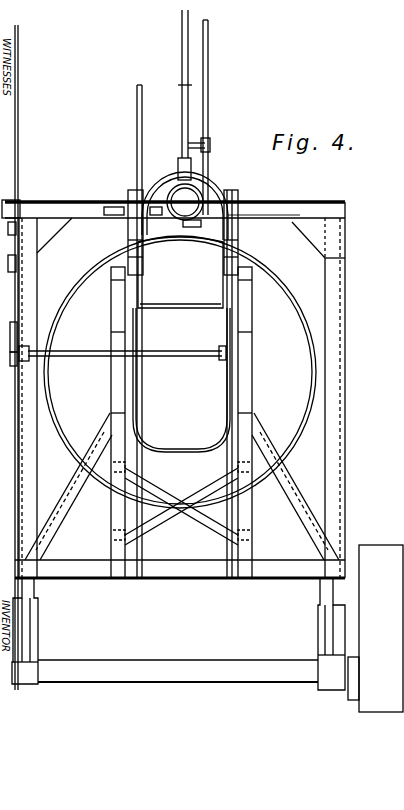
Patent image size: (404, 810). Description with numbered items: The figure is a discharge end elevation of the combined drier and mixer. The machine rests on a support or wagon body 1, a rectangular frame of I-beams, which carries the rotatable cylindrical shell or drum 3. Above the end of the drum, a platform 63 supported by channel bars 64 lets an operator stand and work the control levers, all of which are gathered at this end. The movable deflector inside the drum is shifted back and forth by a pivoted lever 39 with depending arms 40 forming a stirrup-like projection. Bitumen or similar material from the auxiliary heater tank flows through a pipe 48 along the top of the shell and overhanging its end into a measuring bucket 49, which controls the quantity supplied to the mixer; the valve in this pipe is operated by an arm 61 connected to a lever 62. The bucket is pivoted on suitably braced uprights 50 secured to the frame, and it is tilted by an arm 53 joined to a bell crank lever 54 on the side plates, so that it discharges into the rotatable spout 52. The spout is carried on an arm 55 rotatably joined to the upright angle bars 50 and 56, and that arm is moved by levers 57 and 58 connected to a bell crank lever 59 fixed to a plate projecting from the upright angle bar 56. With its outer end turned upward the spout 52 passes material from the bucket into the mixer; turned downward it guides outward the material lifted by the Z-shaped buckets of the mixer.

The support or wagon body 1 is at (24, 590).
The rotatable cylindrical shell or drum 3 is at (280, 292).
The pivoted lever 39 is at (182, 68).
The arms 40 is at (128, 336).
The pipe 48 is at (185, 205).
The measuring bucket 49 is at (207, 272).
The uprights 50 is at (113, 534).
The spout 52 is at (196, 452).
The arm 53 is at (137, 147).
The bell crank lever 54 is at (130, 241).
The arm 55 is at (81, 350).
The upright angle bar 56 is at (343, 421).
The lever 57 is at (8, 359).
The lever 58 is at (8, 337).
The bell crank lever 59 is at (9, 357).
The arm 61 is at (199, 137).
The lever 62 is at (205, 55).
The platform 63 is at (258, 213).
The channel bars 64 is at (62, 226).